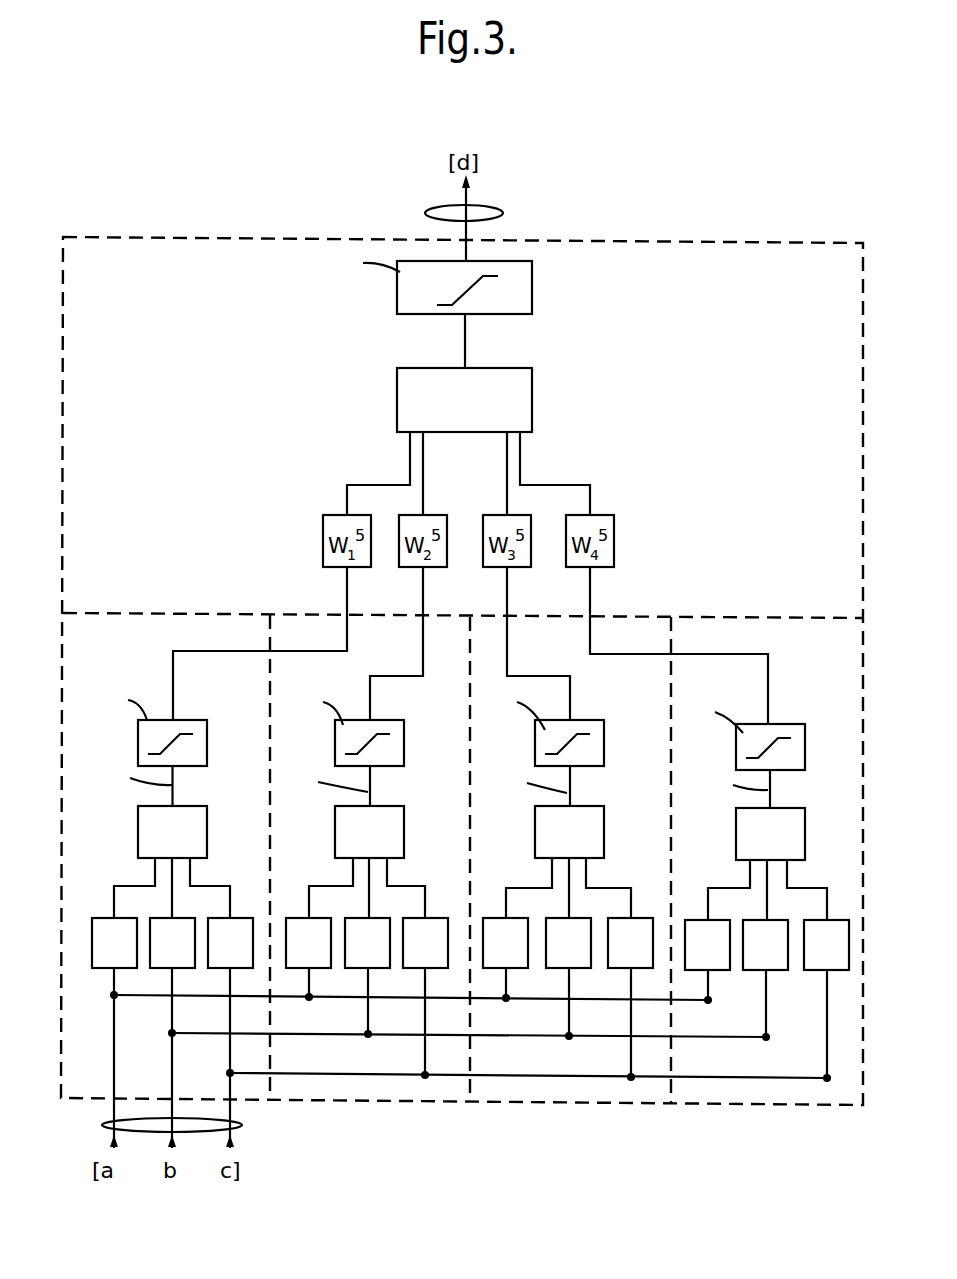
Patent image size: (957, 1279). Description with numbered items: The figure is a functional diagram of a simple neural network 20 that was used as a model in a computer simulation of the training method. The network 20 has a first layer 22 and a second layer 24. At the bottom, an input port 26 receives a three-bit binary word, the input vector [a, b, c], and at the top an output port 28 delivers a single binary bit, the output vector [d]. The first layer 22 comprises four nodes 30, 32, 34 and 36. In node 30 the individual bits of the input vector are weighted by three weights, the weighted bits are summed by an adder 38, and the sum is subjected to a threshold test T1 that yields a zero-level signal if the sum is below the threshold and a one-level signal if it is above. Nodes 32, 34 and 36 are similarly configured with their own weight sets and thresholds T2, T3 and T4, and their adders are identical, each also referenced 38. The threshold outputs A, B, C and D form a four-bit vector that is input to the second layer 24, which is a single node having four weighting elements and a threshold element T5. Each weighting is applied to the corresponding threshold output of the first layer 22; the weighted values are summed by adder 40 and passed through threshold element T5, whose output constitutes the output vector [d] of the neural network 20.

The neural network 20 is at (385, 1155).
The first layer 22 is at (62, 1036).
The second layer 24 is at (63, 392).
The input port 26 is at (102, 1122).
The output port 28 is at (503, 212).
The node 30 is at (118, 625).
The node 32 is at (316, 625).
The node 34 is at (623, 626).
The node 36 is at (785, 627).
The adder 38 is at (140, 826).
The adder 40 is at (530, 397).